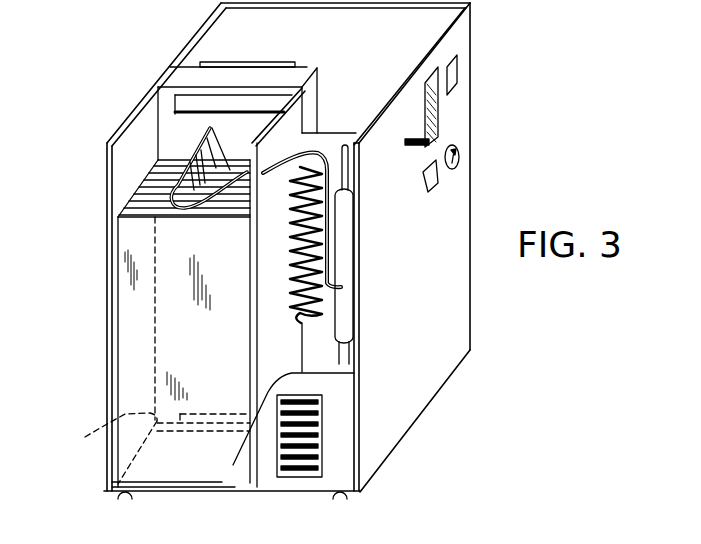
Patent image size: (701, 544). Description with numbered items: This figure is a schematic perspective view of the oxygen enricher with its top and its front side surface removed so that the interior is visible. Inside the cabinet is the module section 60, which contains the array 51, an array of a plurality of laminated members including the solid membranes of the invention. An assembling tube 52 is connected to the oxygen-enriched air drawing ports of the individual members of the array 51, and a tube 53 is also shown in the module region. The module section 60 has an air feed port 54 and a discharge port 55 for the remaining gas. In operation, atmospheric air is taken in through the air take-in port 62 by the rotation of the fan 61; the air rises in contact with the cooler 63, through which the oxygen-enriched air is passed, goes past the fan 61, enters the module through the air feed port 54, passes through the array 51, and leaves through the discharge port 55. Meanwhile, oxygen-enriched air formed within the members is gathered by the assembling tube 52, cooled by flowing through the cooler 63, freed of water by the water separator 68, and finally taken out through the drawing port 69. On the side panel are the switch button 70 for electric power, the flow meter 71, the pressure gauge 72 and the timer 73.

The module section 60 is at (130, 150).
The fan 61 is at (271, 62).
The air feed port 54 is at (173, 100).
The assembling tube 52 is at (203, 141).
The array 51 is at (124, 338).
The discharge port 55 is at (154, 448).
The air take-in port 62 is at (300, 478).
The feed tube 53 is at (315, 147).
The cooler 63 is at (290, 300).
The water separator 68 is at (345, 320).
The drawing port 69 is at (427, 145).
The switch button 70 is at (458, 64).
The flow meter 71 is at (424, 125).
The pressure gauge 72 is at (459, 163).
The timer 73 is at (432, 193).